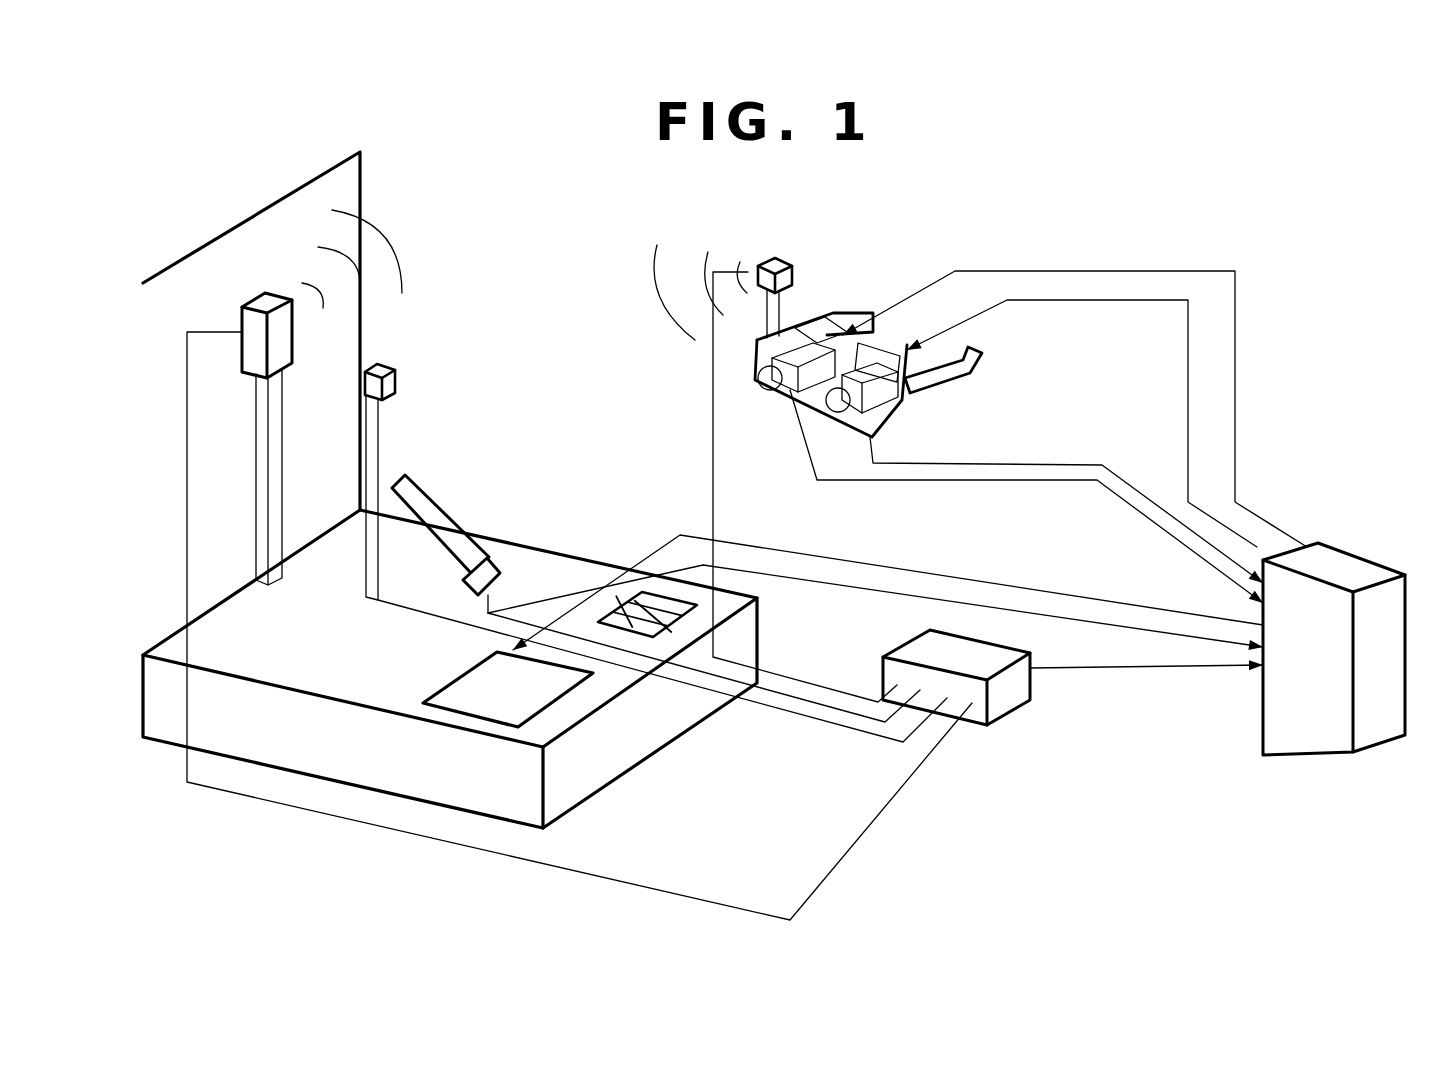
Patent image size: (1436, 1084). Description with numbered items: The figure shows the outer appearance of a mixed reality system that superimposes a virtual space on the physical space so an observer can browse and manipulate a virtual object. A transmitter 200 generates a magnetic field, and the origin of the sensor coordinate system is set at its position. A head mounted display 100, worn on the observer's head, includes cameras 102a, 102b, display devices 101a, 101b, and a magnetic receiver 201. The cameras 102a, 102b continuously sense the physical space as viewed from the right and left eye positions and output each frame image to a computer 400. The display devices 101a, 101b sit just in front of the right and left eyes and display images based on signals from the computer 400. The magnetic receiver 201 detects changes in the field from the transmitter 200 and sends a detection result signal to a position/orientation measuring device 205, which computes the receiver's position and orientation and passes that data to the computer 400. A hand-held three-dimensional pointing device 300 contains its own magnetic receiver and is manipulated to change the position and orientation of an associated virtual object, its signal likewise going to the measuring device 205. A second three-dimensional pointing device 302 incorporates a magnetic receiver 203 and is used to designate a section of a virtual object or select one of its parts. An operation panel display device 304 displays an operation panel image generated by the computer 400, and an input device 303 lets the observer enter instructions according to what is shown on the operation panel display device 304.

The head mounted display 100 is at (983, 368).
The display device 101a is at (823, 343).
The display device 101b is at (888, 363).
The camera 102a is at (770, 380).
The camera 102b is at (855, 405).
The transmitter 200 is at (268, 305).
The magnetic receiver 201 is at (760, 260).
The magnetic receiver 203 is at (488, 568).
The position/orientation measuring device 205 is at (1007, 698).
The 3D pointing device 300 is at (380, 368).
The 3D pointing device 302 is at (430, 492).
The input device 303 is at (646, 617).
The operation panel display device 304 is at (527, 693).
The computer 400 is at (1305, 712).